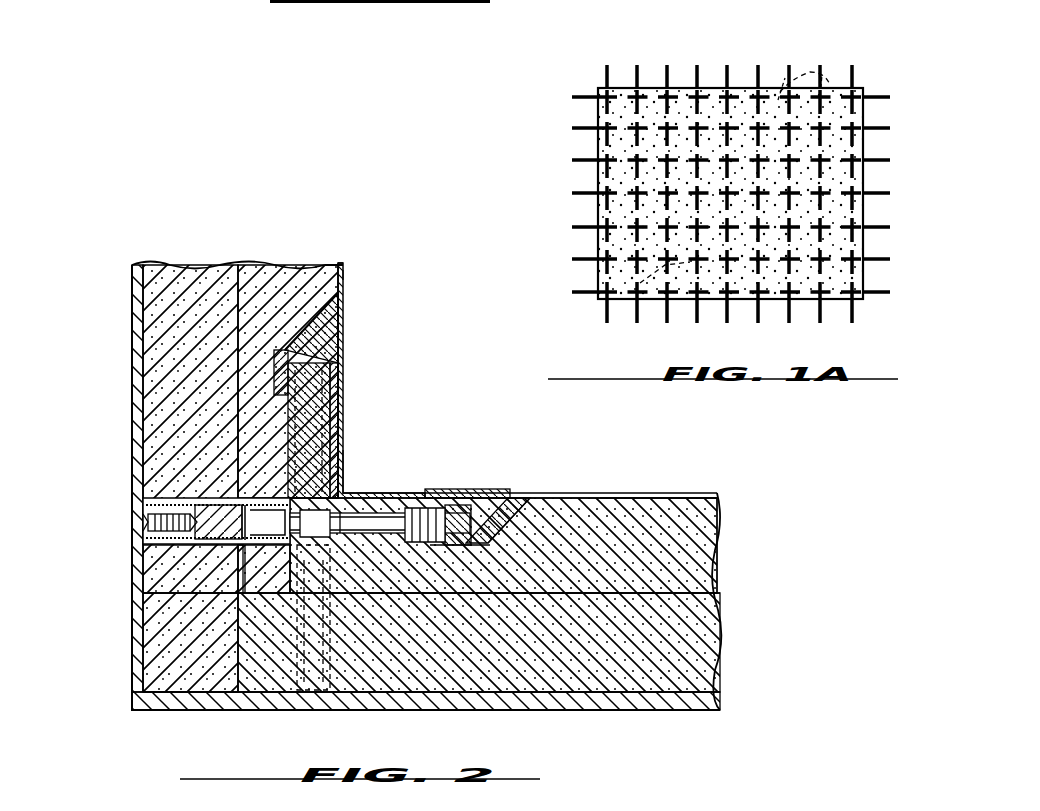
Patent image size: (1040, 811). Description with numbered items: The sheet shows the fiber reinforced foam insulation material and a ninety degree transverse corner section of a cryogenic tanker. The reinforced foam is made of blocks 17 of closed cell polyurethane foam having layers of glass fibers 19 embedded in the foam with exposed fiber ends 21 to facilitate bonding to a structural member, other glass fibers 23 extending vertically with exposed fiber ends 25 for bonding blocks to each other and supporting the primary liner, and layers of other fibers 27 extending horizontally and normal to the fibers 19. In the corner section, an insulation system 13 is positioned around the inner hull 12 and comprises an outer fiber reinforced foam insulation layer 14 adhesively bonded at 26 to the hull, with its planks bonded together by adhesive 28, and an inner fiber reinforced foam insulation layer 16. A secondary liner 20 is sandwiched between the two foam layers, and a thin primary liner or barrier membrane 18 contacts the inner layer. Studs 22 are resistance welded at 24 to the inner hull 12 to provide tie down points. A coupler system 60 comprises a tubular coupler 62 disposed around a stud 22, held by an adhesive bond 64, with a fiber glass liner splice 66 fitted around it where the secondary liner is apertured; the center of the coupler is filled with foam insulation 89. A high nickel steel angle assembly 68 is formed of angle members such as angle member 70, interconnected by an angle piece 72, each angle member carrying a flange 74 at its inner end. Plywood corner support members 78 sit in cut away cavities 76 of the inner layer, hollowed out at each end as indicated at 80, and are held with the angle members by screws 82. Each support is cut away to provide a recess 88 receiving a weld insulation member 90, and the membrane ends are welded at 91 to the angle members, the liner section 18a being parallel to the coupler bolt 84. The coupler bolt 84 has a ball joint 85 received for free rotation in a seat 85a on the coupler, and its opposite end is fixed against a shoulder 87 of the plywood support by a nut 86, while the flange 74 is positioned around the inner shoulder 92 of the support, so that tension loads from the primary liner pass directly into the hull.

In FIG. 2, the inner hull 12 is at (133, 385).
In FIG. 2, the insulation system 13 is at (625, 500).
In FIG. 2, the outer fiber reinforced foam insulation layer 14 is at (530, 660).
In FIG. 2, the inner fiber reinforced foam insulation layer 16 is at (722, 523).
In FIG. 2, the blocks 17 is at (150, 347).
In FIG. 1A, the blocks 17 is at (652, 62).
In FIG. 2, the primary liner or barrier membrane 18 is at (350, 262).
In FIG. 2, the liner section 18a is at (688, 492).
In FIG. 1A, the layers of glass fibers 19 is at (600, 172).
In FIG. 2, the secondary liner 20 is at (235, 300).
In FIG. 1A, the exposed fiber ends 21 is at (590, 157).
In FIG. 2, the studs 22 is at (146, 522).
In FIG. 1A, the glass fibers 23 is at (822, 62).
In FIG. 2, the resistance weld 24 is at (143, 528).
In FIG. 1A, the exposed fiber ends 25 is at (625, 70).
In FIG. 2, the adhesive bond 26 is at (615, 712).
In FIG. 1A, the layers of other fibers 27 is at (650, 270).
In FIG. 2, the adhesive 28 is at (210, 712).
In FIG. 2, the coupler system 60 is at (352, 390).
In FIG. 2, the coupler 62 is at (175, 500).
In FIG. 2, the adhesive bond 64 is at (215, 503).
In FIG. 2, the fiber glass liner splice 66 is at (242, 500).
In FIG. 2, the angle assembly 68 is at (350, 445).
In FIG. 2, the angle member 70 is at (352, 430).
In FIG. 2, the angle piece 72 is at (346, 480).
In FIG. 2, the flange 74 is at (335, 533).
In FIG. 2, the cavity 76 is at (341, 262).
In FIG. 2, the plywood corner support member 78 is at (350, 310).
In FIG. 2, the hollowed out end 80 is at (498, 535).
In FIG. 2, the screws 82 is at (296, 328).
In FIG. 2, the coupler bolt 84 is at (290, 448).
In FIG. 2, the ball joint 85 is at (267, 569).
In FIG. 2, the seat 85a is at (262, 508).
In FIG. 2, the nut 86 is at (445, 490).
In FIG. 2, the shoulder 87 is at (455, 548).
In FIG. 2, the recess 88 is at (345, 345).
In FIG. 2, the foam insulation 89 is at (180, 560).
In FIG. 2, the weld insulation member 90 is at (346, 372).
In FIG. 2, the weld 91 is at (345, 408).
In FIG. 2, the inner shoulder 92 is at (332, 430).